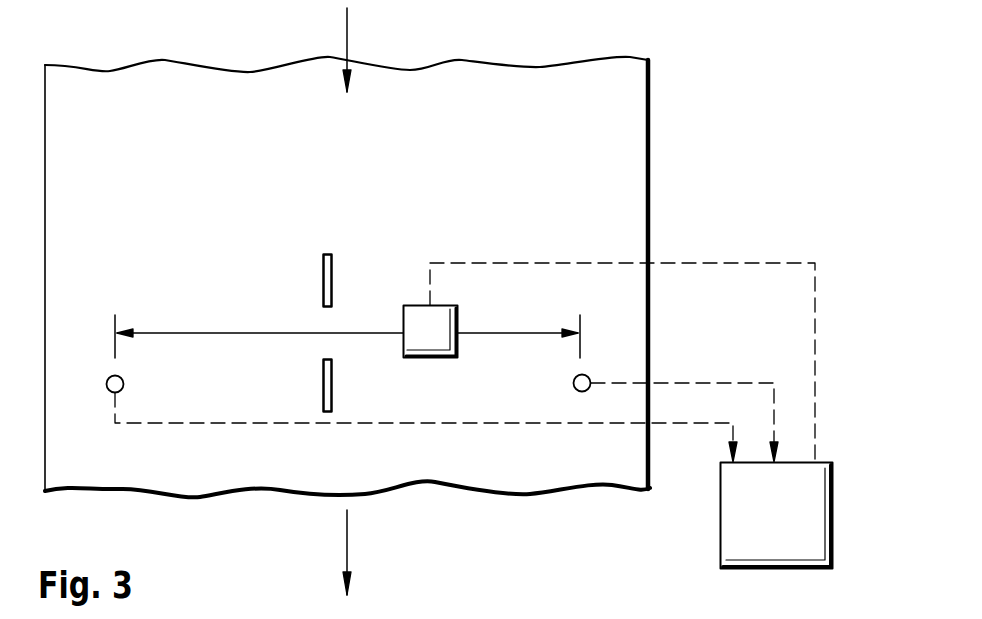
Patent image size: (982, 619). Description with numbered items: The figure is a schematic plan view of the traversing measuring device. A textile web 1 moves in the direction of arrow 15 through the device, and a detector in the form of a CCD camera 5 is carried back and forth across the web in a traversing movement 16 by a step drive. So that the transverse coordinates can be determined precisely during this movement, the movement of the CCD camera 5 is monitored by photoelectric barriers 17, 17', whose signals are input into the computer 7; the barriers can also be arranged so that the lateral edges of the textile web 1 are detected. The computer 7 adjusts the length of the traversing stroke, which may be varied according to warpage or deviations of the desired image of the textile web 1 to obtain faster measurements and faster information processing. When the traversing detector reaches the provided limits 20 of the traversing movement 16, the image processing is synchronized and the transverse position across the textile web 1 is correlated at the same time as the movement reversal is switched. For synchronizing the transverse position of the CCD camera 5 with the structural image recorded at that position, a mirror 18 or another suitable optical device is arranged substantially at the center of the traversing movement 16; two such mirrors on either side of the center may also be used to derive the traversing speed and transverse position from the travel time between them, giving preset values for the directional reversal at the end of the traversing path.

The textile web 1 is at (625, 160).
The CCD camera 5 is at (420, 315).
The computer 7 is at (735, 522).
The arrow 15 is at (345, 28).
The traversing movement 16 is at (240, 330).
The photoelectric barrier 17 is at (422, 417).
The photoelectric barrier 17' is at (641, 417).
The mirror 18 is at (323, 285).
The limits 20 is at (118, 323).